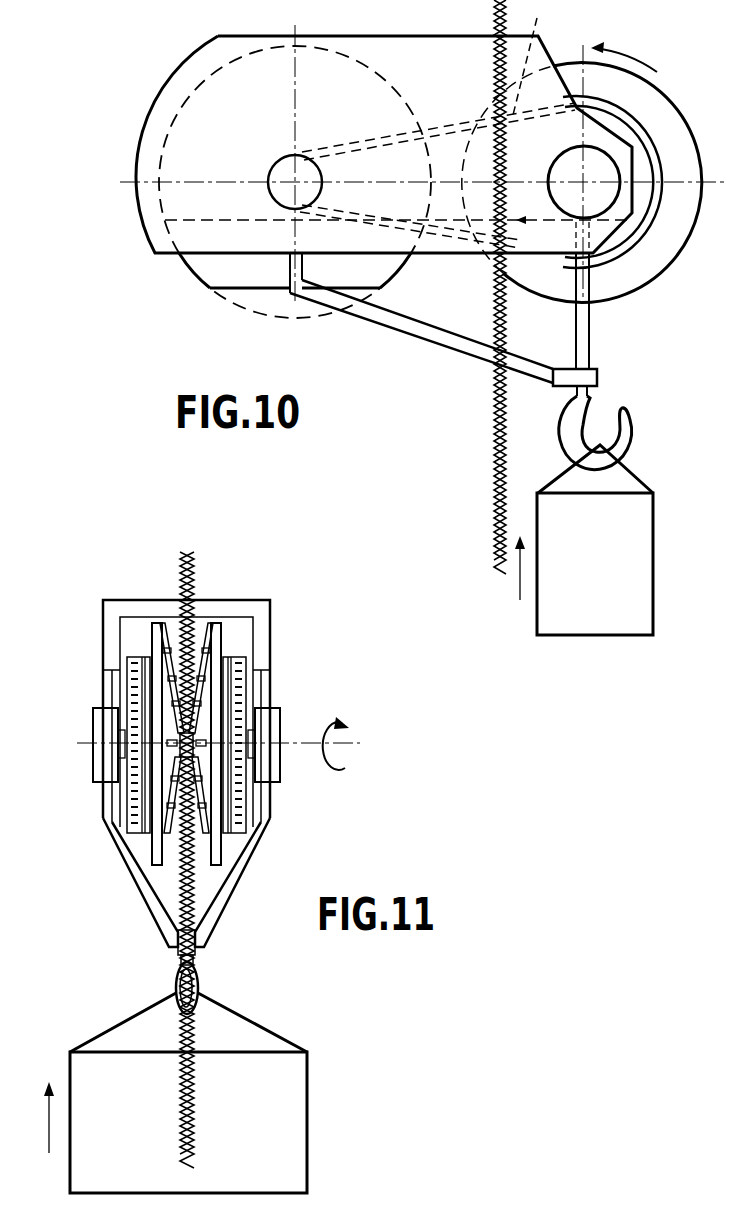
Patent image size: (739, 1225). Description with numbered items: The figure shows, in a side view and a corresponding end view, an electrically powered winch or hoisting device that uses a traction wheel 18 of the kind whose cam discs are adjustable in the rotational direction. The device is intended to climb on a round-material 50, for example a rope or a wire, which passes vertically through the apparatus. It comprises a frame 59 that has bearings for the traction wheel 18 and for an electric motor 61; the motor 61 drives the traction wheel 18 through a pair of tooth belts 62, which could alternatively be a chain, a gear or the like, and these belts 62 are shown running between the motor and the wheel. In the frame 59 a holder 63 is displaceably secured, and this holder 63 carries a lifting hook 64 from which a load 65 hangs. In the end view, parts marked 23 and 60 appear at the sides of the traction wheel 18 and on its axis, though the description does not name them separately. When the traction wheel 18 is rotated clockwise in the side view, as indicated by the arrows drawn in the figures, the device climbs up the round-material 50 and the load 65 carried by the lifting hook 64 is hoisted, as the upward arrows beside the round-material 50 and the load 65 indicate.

In FIG. 10, the traction wheel 18 is at (647, 267).
In FIG. 11, the traction wheel 18 is at (203, 630).
In FIG. 11, the side plates 23 is at (153, 634).
In FIG. 10, the round-material 50 is at (488, 468).
In FIG. 10, the frame 59 is at (433, 52).
In FIG. 11, the frame 59 is at (253, 608).
In FIG. 10, the bearing hub 60 is at (598, 162).
In FIG. 11, the bearing hub 60 is at (98, 723).
In FIG. 10, the electric motor 61 is at (226, 272).
In FIG. 10, the tooth belts 62 is at (537, 18).
In FIG. 11, the tooth belts 62 is at (133, 829).
In FIG. 10, the holder 63 is at (468, 345).
In FIG. 11, the holder 63 is at (150, 900).
In FIG. 10, the lifting hook 64 is at (627, 432).
In FIG. 11, the lifting hook 64 is at (187, 990).
In FIG. 10, the load 65 is at (633, 573).
In FIG. 11, the load 65 is at (278, 1110).